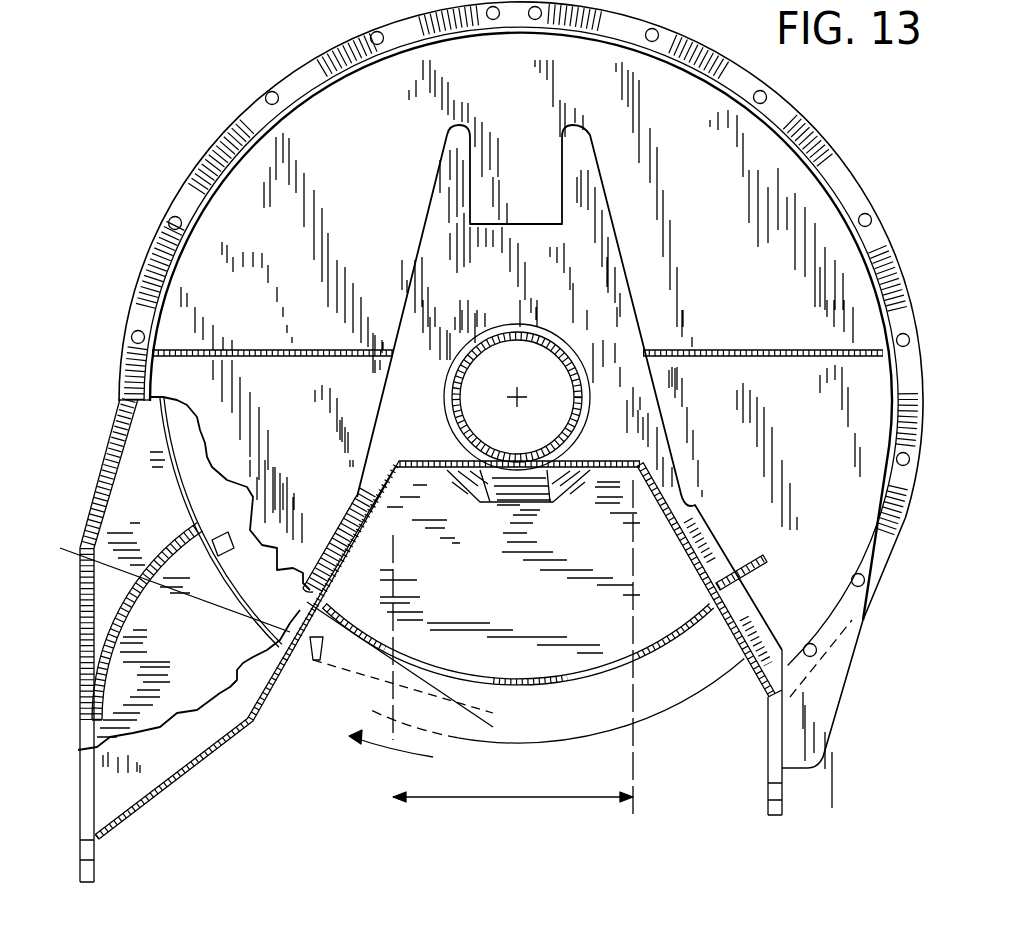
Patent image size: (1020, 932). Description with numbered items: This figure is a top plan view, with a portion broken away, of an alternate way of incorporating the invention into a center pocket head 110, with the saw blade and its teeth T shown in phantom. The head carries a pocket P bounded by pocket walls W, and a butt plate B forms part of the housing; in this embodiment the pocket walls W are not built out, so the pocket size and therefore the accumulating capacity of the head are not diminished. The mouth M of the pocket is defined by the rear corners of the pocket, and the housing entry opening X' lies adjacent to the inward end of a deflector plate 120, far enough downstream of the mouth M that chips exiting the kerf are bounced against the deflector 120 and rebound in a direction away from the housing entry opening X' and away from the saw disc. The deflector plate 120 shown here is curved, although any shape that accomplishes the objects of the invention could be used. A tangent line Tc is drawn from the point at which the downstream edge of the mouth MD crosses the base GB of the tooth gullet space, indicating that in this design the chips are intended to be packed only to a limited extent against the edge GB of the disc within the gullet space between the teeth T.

The center pocket head 110 is at (195, 135).
The deflector plate 120 is at (130, 612).
The tangent line Tc is at (72, 547).
The housing entry opening X' is at (221, 522).
The pocket P is at (366, 562).
The pocket walls W is at (390, 502).
The base of the tooth gullet space GB is at (370, 673).
The butt plate B is at (521, 606).
The teeth T is at (318, 666).
The downstream edge of the mouth MD is at (392, 798).
The mouth of the pocket M is at (513, 647).